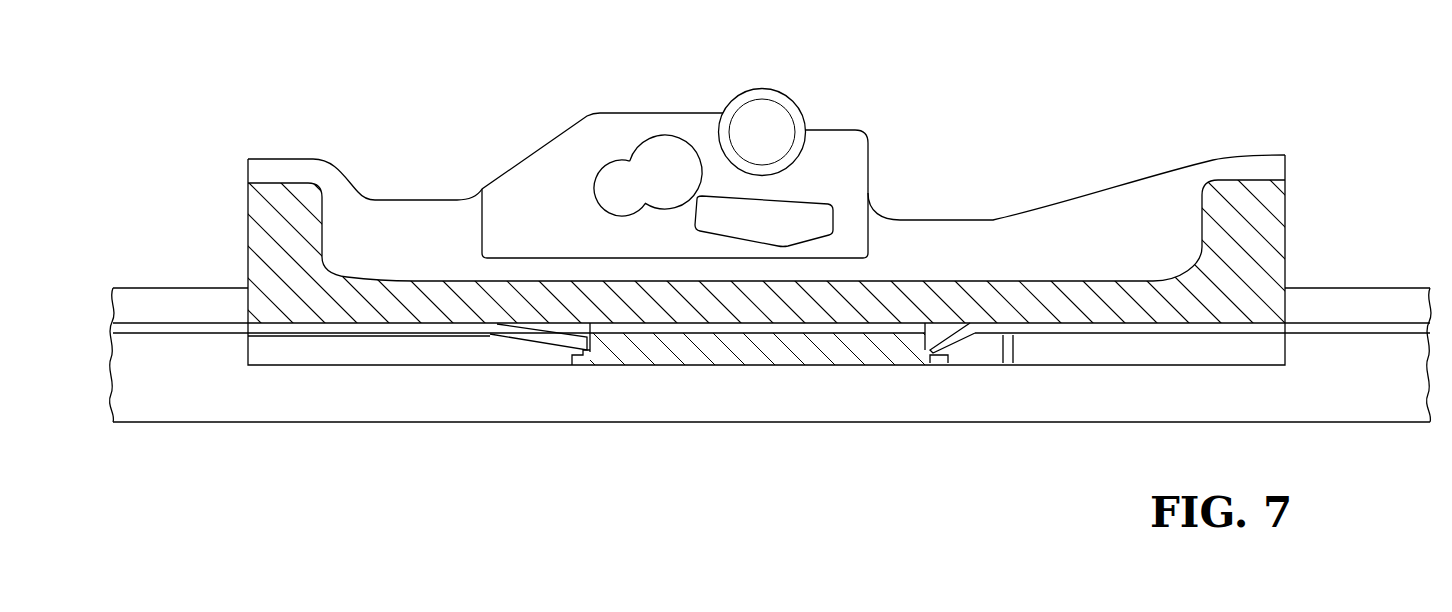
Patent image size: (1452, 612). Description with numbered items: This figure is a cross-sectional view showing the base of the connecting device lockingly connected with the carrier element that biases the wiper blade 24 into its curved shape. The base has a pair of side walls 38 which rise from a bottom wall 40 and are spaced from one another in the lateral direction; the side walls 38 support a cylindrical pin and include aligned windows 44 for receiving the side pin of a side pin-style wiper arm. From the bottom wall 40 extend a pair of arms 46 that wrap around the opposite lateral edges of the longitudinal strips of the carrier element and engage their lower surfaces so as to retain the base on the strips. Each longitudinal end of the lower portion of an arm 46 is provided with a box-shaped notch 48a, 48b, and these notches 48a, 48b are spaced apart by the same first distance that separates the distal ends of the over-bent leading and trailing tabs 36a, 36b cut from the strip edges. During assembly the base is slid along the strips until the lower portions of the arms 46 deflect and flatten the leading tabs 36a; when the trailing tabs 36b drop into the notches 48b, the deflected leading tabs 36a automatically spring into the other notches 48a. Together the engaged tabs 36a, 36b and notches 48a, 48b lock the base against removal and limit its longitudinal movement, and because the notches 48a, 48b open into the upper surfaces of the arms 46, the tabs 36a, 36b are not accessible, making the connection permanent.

The wiper blade 24 is at (340, 408).
The side wall 38 is at (527, 165).
The bottom wall 40 is at (907, 280).
The window 44 is at (628, 177).
The arm 46 is at (777, 358).
The leading tab 36a is at (962, 338).
The trailing tab 36b is at (553, 348).
The notch 48a is at (932, 348).
The notch 48b is at (593, 350).